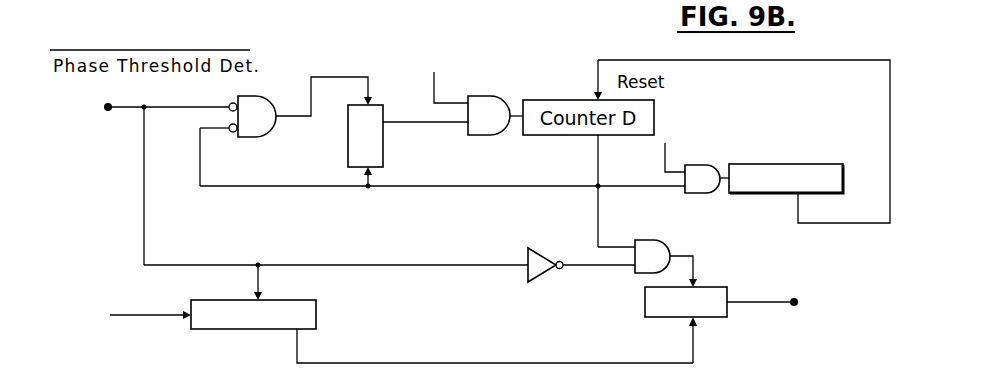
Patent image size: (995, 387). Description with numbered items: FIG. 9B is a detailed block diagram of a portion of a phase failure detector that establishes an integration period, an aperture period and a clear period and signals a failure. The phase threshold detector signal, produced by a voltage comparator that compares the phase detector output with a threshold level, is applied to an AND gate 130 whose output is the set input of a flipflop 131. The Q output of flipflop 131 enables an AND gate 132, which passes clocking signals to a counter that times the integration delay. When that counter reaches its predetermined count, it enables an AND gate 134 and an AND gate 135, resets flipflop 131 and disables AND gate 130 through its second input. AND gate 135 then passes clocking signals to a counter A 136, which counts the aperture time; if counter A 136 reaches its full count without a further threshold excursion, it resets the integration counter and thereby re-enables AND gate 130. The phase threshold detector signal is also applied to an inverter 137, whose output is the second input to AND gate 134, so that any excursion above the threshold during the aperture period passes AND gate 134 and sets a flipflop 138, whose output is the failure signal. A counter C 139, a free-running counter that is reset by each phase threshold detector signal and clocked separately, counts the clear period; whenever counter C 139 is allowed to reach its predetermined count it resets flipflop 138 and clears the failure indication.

The AND gate 130 is at (252, 118).
The flipflop 131 is at (375, 138).
The AND gate 132 is at (482, 112).
The AND gate 134 is at (655, 252).
The AND gate 135 is at (692, 190).
The counter A 136 is at (800, 164).
The inverter 137 is at (527, 253).
The flipflop 138 is at (723, 305).
The counter C 139 is at (310, 315).